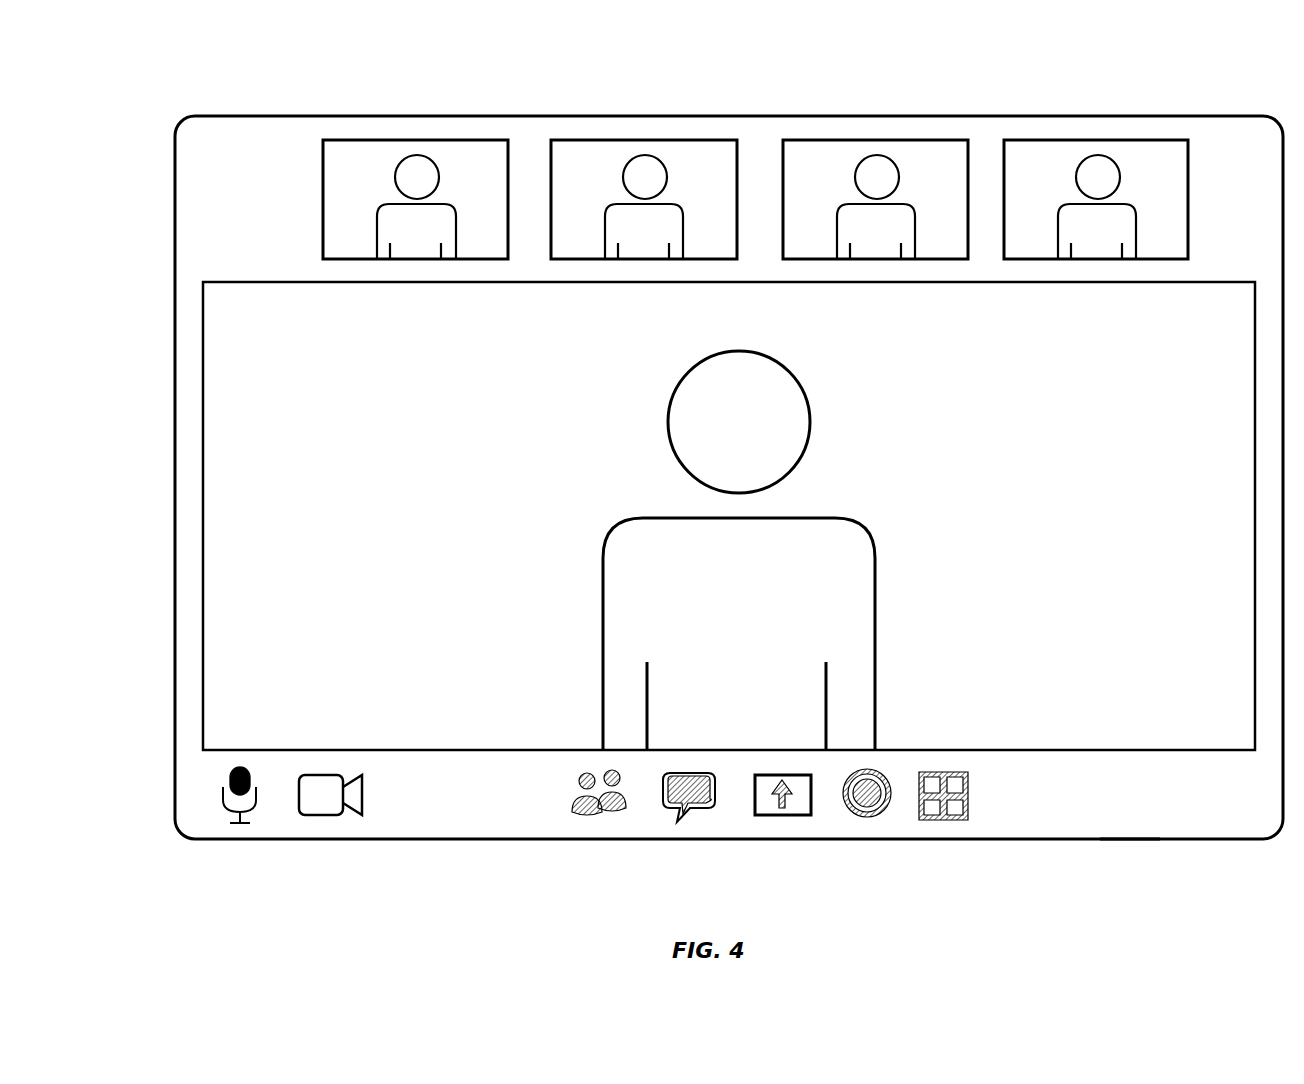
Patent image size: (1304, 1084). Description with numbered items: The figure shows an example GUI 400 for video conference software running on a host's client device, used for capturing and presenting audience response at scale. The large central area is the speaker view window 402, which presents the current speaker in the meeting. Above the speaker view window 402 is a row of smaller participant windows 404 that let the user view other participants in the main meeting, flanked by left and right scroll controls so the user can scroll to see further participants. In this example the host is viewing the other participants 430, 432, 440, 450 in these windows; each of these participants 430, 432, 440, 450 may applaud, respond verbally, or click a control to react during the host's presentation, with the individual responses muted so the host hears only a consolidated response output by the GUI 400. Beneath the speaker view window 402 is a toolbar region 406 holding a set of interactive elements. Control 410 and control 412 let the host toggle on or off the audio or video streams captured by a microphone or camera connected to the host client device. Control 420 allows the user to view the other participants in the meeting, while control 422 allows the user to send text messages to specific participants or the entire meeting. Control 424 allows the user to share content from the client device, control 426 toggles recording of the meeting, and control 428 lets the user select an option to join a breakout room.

The GUI 400 is at (142, 94).
The speaker view window 402 is at (363, 705).
The participant windows 404 is at (293, 143).
The toolbar 406 is at (1130, 815).
The control 410 is at (240, 824).
The control 412 is at (337, 815).
The control 420 is at (603, 814).
The control 422 is at (692, 818).
The control 424 is at (795, 815).
The control 426 is at (868, 818).
The control 428 is at (955, 820).
The participant 430 is at (415, 140).
The participant 432 is at (645, 140).
The participant 440 is at (875, 157).
The participant 450 is at (1097, 140).